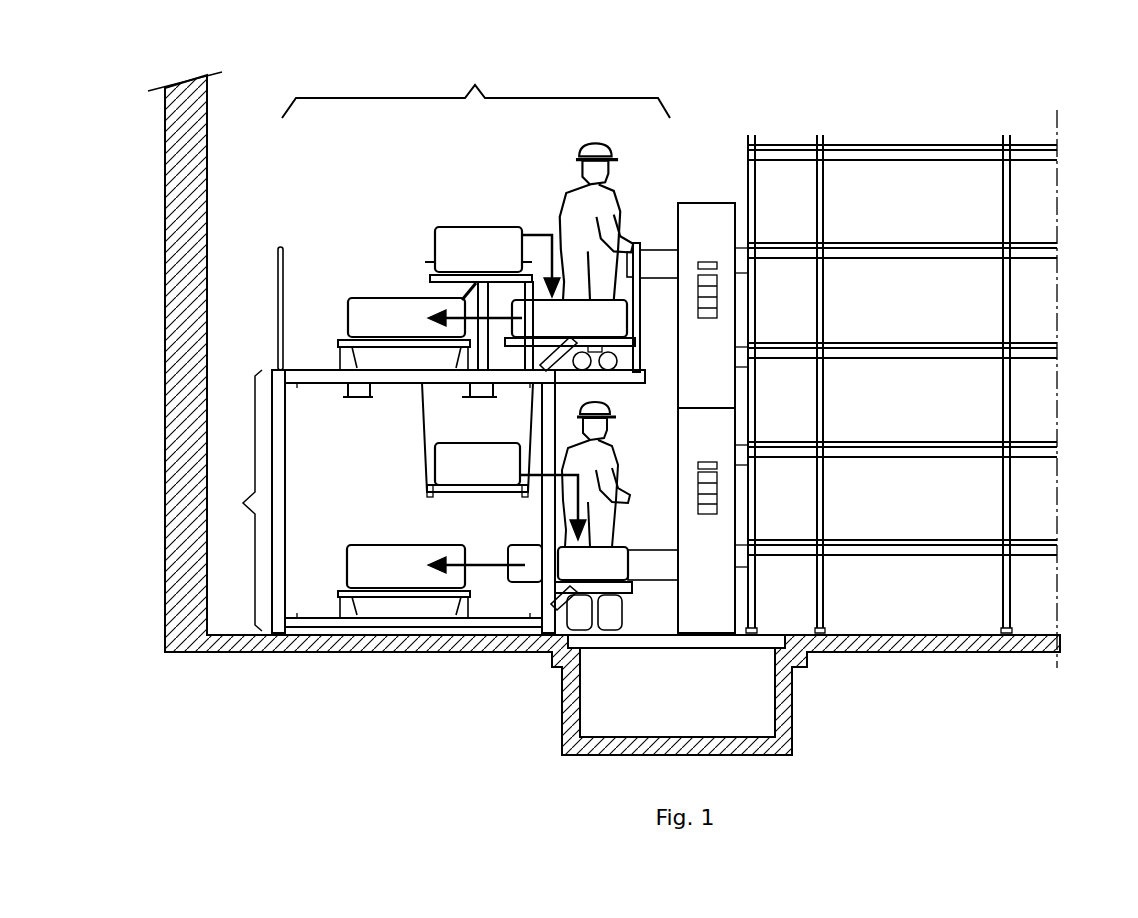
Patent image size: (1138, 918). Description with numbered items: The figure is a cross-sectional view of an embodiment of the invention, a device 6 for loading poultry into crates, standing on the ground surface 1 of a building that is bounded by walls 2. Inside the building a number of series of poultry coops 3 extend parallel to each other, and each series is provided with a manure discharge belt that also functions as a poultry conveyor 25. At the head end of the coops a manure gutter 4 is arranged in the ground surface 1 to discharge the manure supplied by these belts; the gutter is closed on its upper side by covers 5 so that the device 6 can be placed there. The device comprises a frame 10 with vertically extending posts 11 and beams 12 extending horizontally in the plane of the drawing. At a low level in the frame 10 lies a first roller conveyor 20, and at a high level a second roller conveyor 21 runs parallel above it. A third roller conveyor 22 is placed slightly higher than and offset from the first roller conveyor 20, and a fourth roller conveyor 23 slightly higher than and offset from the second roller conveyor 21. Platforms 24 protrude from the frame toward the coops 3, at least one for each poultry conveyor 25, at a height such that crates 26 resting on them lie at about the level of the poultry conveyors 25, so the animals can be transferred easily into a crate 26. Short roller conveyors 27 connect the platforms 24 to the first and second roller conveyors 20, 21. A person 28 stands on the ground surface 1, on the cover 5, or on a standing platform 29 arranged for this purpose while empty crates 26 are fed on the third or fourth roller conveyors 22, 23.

The ground surface 1 is at (323, 647).
The walls 2 is at (180, 240).
The poultry coops 3 is at (962, 406).
The manure gutter 4 is at (674, 706).
The covers 5 is at (653, 642).
The device 6 is at (476, 88).
The frame 10 is at (237, 500).
The posts 11 is at (285, 510).
The beams 12 is at (325, 384).
The first roller conveyor 20 is at (396, 598).
The second roller conveyor 21 is at (392, 384).
The third roller conveyor 22 is at (460, 490).
The fourth roller conveyor 23 is at (440, 272).
The platforms 24 is at (625, 341).
The poultry conveyors 25 is at (905, 253).
The crates 26 is at (388, 331).
The short roller conveyors 27 is at (510, 347).
The person 28 is at (600, 203).
The standing platform 29 is at (645, 378).